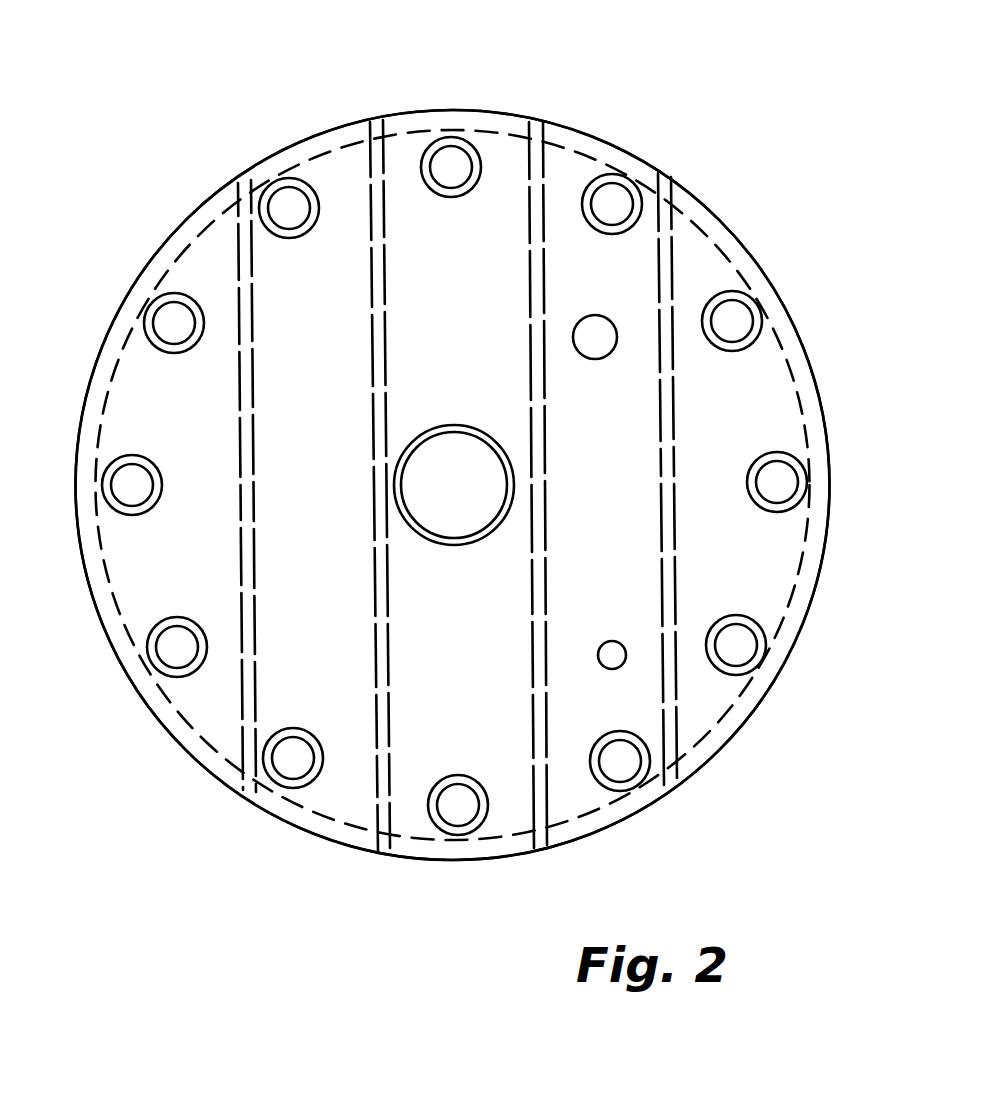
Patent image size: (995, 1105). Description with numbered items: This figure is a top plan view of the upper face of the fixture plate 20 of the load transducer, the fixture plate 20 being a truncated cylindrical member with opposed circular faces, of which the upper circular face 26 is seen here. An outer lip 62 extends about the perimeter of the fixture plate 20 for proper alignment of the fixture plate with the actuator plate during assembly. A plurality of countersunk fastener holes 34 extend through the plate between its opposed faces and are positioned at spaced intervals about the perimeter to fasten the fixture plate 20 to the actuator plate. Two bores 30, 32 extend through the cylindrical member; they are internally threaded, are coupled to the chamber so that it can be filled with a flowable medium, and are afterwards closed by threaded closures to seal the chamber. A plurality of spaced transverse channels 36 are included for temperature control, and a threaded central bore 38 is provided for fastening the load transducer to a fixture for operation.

The fixture plate 20 is at (795, 291).
The circular face 26 is at (433, 627).
The bore 30 is at (607, 648).
The bore 32 is at (583, 356).
The countersunk fastener holes 34 is at (453, 160).
The transverse channels 36 is at (670, 182).
The threaded central bore 38 is at (440, 428).
The outer lip 62 is at (575, 133).